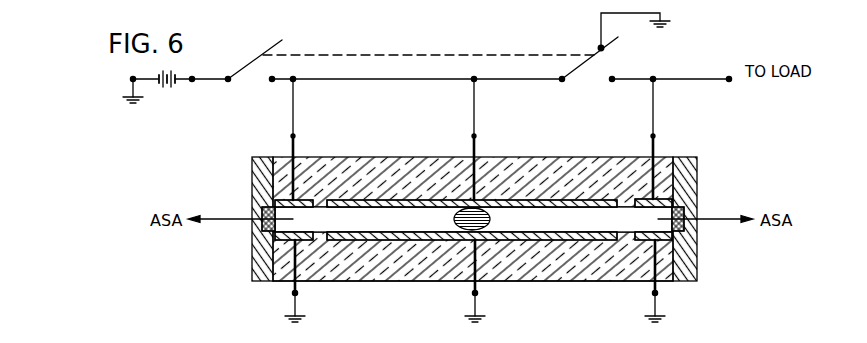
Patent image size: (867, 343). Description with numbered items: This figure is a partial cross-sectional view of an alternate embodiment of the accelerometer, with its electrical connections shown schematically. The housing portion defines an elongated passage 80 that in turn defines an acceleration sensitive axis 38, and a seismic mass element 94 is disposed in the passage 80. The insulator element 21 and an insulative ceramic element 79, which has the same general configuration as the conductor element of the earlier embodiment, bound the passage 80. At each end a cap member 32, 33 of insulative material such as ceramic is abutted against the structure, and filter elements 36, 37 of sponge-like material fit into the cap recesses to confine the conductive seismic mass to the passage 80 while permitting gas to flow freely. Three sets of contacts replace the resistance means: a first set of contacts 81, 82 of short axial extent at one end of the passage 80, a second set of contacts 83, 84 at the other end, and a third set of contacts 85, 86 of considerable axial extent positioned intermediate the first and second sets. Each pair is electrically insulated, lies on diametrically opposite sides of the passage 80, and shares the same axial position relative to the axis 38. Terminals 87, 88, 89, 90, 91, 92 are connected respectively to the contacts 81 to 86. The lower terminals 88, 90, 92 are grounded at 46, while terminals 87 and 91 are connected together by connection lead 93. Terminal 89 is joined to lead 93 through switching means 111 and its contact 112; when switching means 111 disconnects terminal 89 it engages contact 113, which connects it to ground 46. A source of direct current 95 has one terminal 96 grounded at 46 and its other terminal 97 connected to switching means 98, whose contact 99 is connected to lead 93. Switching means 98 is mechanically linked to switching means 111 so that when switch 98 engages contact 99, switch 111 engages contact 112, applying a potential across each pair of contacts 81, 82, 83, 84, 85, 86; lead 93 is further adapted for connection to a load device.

The insulator element 21 is at (390, 157).
The cap member 32 is at (697, 183).
The cap member 33 is at (252, 176).
The filter element 36 is at (697, 229).
The filter element 37 is at (261, 226).
The acceleration sensitive axis 38 is at (220, 220).
The ground 46 is at (127, 100).
The insulative element 79 is at (413, 282).
The passage 80 is at (575, 225).
The first contact 81 is at (288, 206).
The first contact 82 is at (305, 232).
The second contact 83 is at (640, 204).
The second contact 84 is at (663, 232).
The third contact 85 is at (414, 206).
The third contact 86 is at (362, 232).
The terminal 87 is at (296, 144).
The terminal 88 is at (298, 293).
The terminal 89 is at (656, 144).
The terminal 90 is at (658, 288).
The terminal 91 is at (477, 144).
The terminal 92 is at (478, 293).
The connection lead 93 is at (380, 79).
The seismic mass element 94 is at (491, 218).
The source of direct current 95 is at (166, 86).
The terminal 96 is at (131, 79).
The terminal 97 is at (193, 78).
The switching means 98 is at (253, 63).
The contact 99 is at (273, 78).
The switching means 111 is at (585, 64).
The contact 112 is at (613, 82).
The contact 113 is at (599, 47).